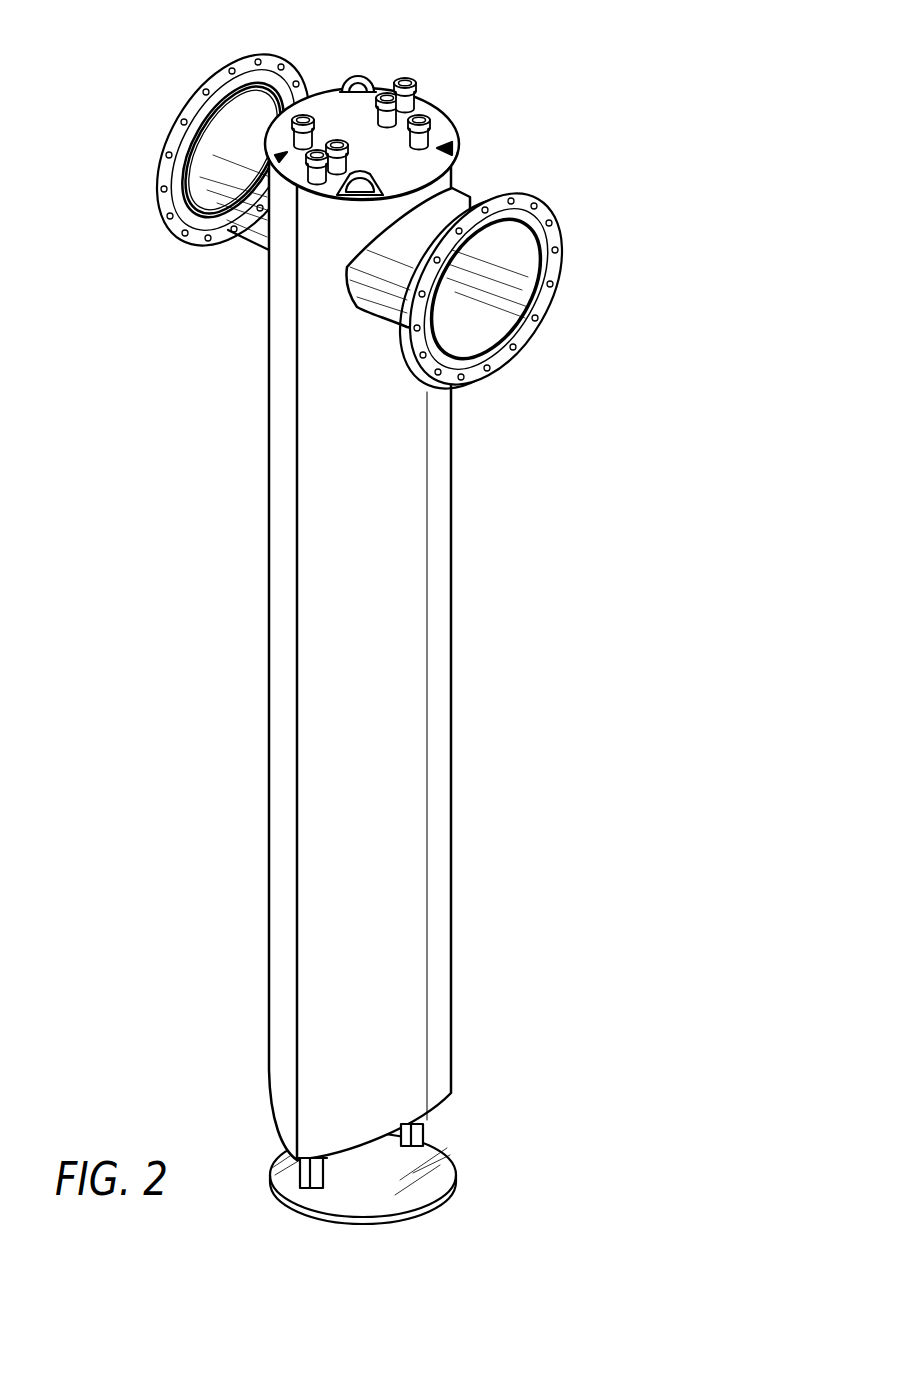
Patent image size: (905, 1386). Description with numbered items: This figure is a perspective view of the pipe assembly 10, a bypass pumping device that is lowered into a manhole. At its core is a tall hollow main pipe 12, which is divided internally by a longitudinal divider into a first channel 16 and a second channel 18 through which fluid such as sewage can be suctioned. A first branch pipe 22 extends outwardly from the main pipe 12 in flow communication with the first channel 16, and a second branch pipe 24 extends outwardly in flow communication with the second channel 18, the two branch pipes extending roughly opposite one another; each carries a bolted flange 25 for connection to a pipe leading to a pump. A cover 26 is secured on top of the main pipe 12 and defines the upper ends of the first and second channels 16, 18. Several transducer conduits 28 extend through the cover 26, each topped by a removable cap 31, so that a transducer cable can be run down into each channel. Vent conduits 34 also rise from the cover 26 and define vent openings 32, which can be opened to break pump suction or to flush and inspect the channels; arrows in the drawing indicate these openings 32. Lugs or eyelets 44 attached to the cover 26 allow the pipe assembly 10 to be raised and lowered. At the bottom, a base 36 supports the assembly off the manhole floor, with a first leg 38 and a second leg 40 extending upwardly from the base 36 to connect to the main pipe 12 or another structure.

The pipe assembly 10 is at (612, 76).
The main pipe 12 is at (445, 742).
The first channel 16 is at (278, 846).
The second channel 18 is at (415, 870).
The first branch pipe 22 is at (241, 215).
The second branch pipe 24 is at (465, 205).
The flange 25 is at (560, 257).
The cover 26 is at (327, 117).
The transducer conduits 28 is at (377, 85).
The removable cap 31 is at (301, 116).
The vent opening 32 is at (278, 157).
The vent conduits 34 is at (283, 153).
The base 36 is at (390, 1198).
The first leg 38 is at (290, 1170).
The second leg 40 is at (423, 1133).
The lugs or eyelets 44 is at (352, 82).